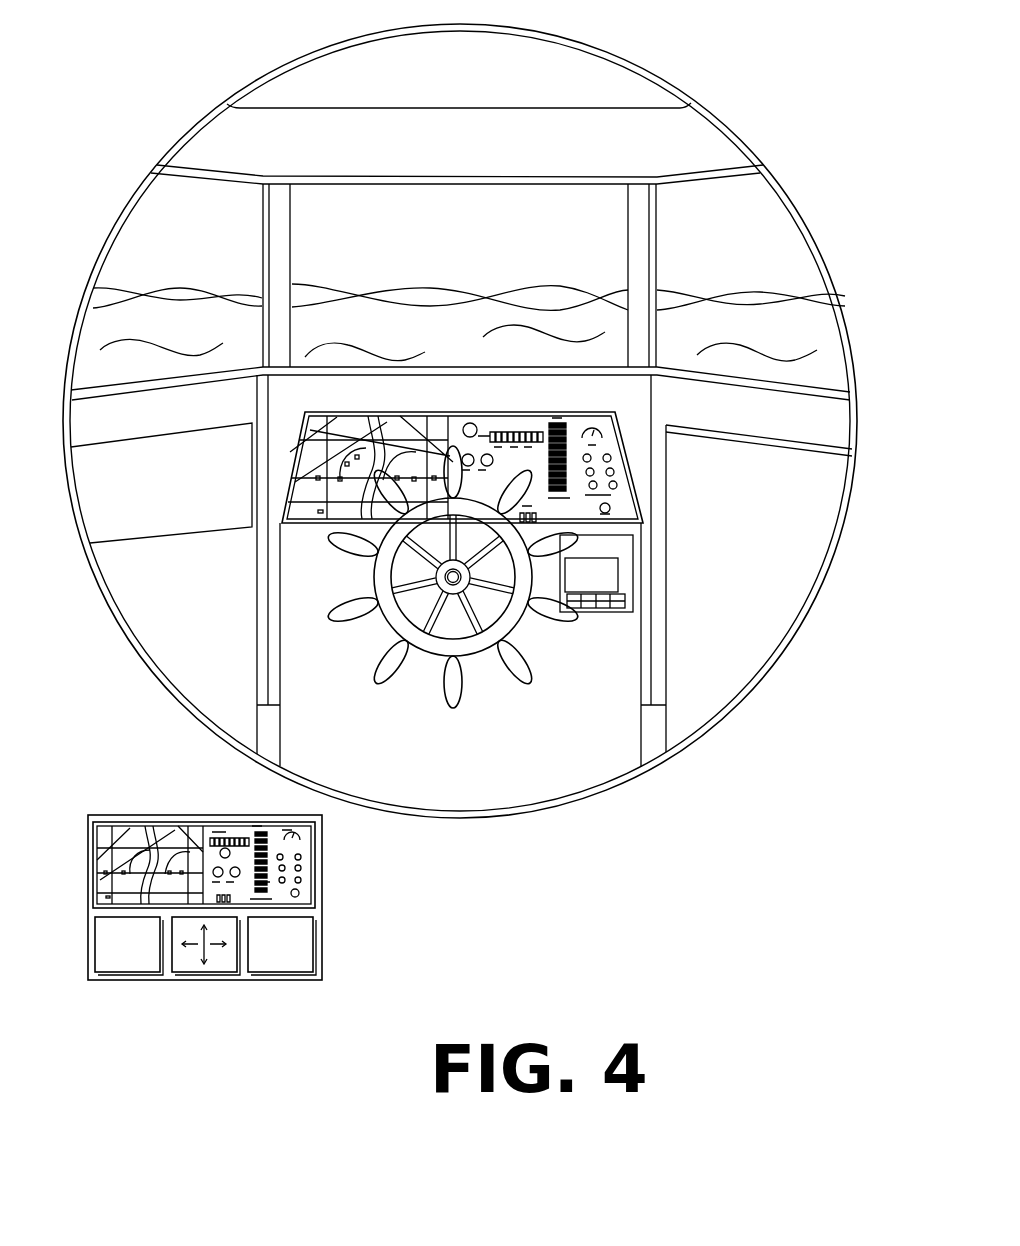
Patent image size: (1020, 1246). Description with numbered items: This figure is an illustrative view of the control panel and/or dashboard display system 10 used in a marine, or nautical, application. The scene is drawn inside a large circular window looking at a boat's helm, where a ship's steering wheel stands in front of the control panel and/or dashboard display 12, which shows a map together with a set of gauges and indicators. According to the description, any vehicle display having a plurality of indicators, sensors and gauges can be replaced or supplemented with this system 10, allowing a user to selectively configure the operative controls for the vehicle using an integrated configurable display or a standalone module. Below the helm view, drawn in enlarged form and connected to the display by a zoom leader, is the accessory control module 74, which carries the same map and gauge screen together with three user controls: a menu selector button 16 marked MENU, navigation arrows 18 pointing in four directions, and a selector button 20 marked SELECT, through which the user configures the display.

The control panel and/or dashboard display system 10 is at (168, 122).
The control panel and/or dashboard display 12 is at (466, 414).
The accessory control module 74 is at (320, 468).
The menu selector button 16 is at (130, 965).
The navigation arrows 18 is at (217, 965).
The selector button 20 is at (283, 965).